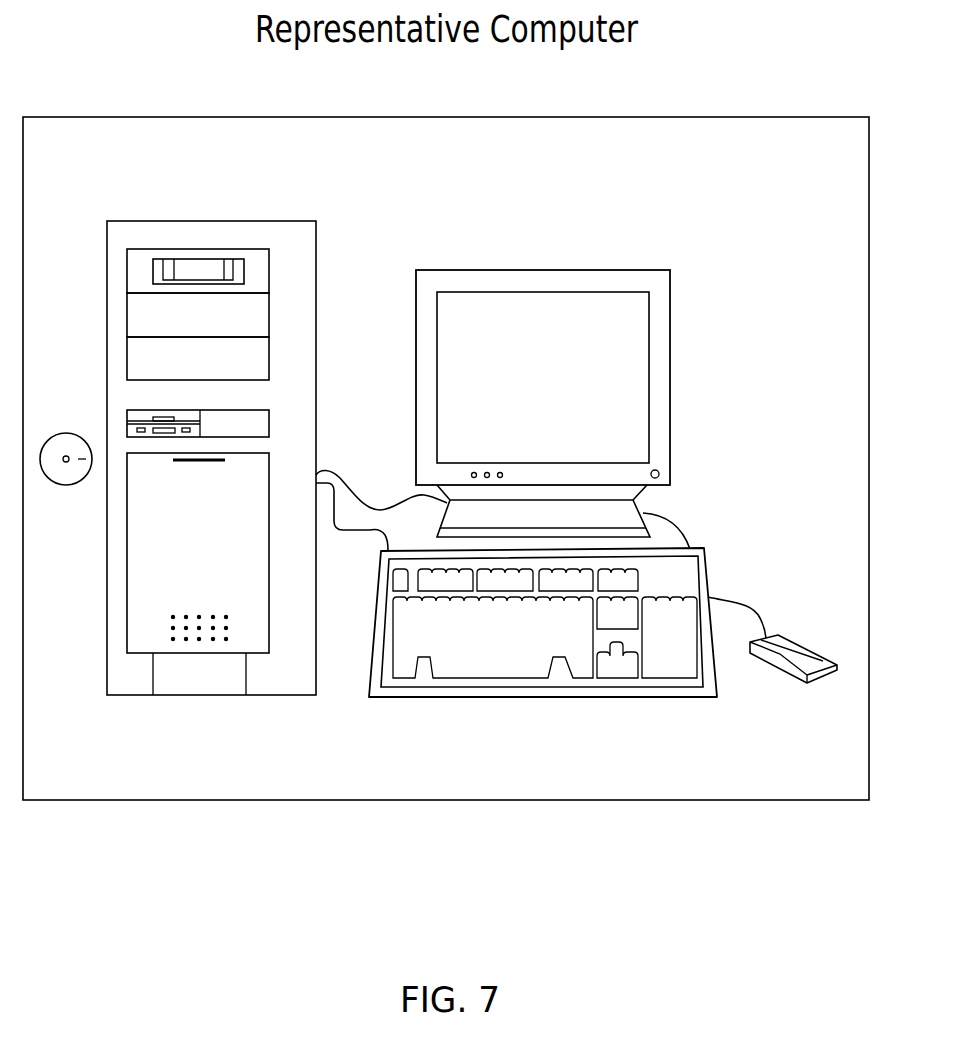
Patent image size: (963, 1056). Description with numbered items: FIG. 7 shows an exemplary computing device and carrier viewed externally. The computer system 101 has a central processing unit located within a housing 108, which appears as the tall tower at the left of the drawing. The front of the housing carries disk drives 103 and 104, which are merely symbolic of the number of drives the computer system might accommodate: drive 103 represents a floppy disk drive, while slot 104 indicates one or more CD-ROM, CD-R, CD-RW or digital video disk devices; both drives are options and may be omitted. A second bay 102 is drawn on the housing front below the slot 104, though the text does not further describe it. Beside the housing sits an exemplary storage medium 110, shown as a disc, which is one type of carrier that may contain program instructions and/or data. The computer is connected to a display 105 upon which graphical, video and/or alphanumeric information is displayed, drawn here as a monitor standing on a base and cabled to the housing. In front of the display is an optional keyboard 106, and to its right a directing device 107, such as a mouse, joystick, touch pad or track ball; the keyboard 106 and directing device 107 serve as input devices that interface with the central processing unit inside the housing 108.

The computer system 101 is at (200, 117).
The drive bay 102 is at (255, 322).
The disk drive 103 is at (144, 415).
The slot 104 is at (255, 267).
The display 105 is at (623, 279).
The keyboard 106 is at (703, 552).
The directing device 107 is at (790, 682).
The housing 108 is at (181, 231).
The storage medium 110 is at (63, 478).